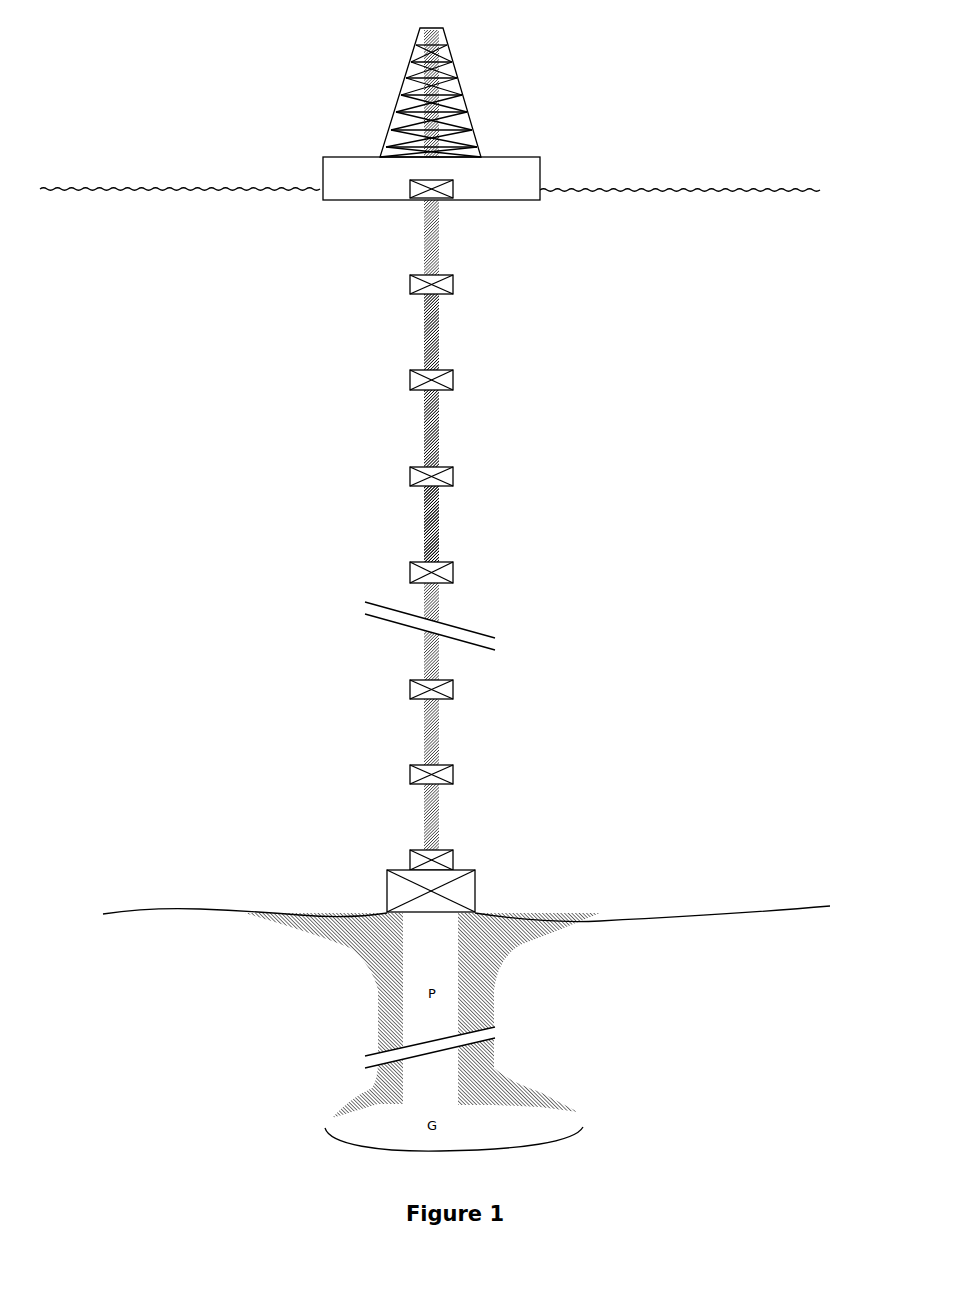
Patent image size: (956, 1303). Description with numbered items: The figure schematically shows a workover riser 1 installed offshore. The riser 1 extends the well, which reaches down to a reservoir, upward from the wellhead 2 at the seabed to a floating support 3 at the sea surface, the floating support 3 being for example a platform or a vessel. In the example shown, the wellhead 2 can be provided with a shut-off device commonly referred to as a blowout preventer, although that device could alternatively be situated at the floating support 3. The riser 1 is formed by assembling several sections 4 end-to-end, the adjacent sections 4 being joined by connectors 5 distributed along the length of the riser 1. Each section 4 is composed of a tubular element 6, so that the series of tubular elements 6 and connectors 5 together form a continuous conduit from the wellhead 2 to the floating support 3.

The workover riser 1 is at (262, 313).
The wellhead 2 is at (478, 886).
The floating support 3 is at (540, 176).
The section 4 is at (369, 286).
The connector 5 is at (460, 286).
The tubular element 6 is at (441, 529).